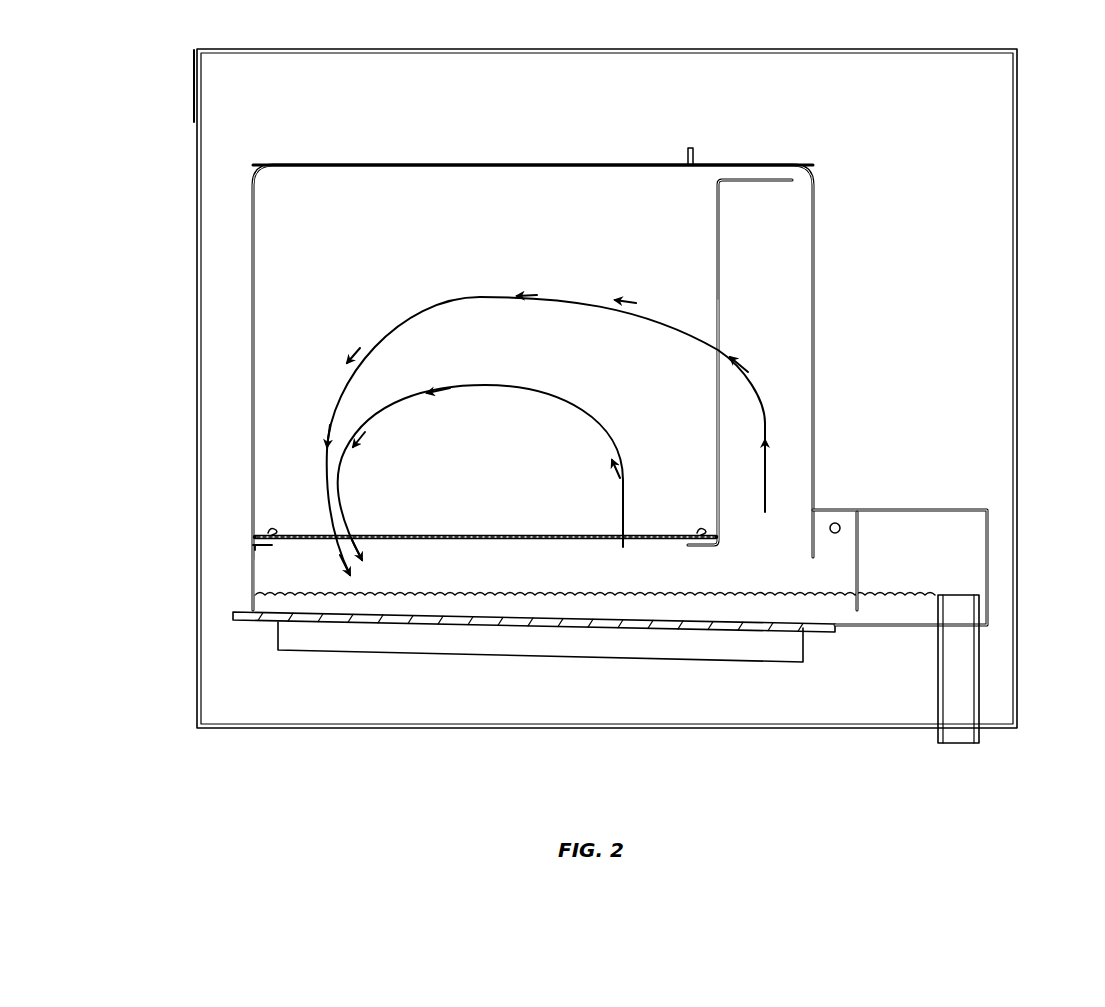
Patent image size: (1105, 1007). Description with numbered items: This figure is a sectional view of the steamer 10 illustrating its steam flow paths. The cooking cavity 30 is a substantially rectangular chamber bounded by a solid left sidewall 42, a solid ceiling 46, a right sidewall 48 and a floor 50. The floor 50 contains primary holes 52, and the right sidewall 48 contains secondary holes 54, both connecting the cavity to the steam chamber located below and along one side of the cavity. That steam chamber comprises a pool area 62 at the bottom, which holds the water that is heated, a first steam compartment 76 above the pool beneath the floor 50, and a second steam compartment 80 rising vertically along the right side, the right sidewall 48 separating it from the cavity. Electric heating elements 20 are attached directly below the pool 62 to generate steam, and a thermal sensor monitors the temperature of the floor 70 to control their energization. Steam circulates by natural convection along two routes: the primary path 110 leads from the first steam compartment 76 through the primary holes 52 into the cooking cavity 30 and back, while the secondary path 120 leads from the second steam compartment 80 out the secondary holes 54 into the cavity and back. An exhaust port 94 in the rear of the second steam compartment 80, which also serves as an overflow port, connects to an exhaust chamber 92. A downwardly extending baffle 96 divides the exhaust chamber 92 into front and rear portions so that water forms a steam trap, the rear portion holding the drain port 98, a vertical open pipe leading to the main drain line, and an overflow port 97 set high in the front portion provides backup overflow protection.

The steamer 10 is at (150, 163).
The heating element 20 is at (352, 638).
The cooking cavity 30 is at (310, 277).
The left sidewall 42 is at (255, 325).
The ceiling 46 is at (537, 167).
The right sidewall 48 is at (716, 278).
The floor 50 is at (305, 532).
The primary holes 52 is at (458, 535).
The secondary holes 54 is at (715, 470).
The pool area 62 is at (503, 608).
The floor 70 is at (727, 627).
The first steam compartment 76 is at (568, 560).
The second steam compartment 80 is at (787, 262).
The exhaust chamber 92 is at (935, 550).
The exhaust port 94 is at (813, 573).
The baffle 96 is at (858, 560).
The overflow port 97 is at (835, 522).
The drain port 98 is at (957, 603).
The primary path 110 is at (513, 388).
The secondary path 120 is at (462, 297).